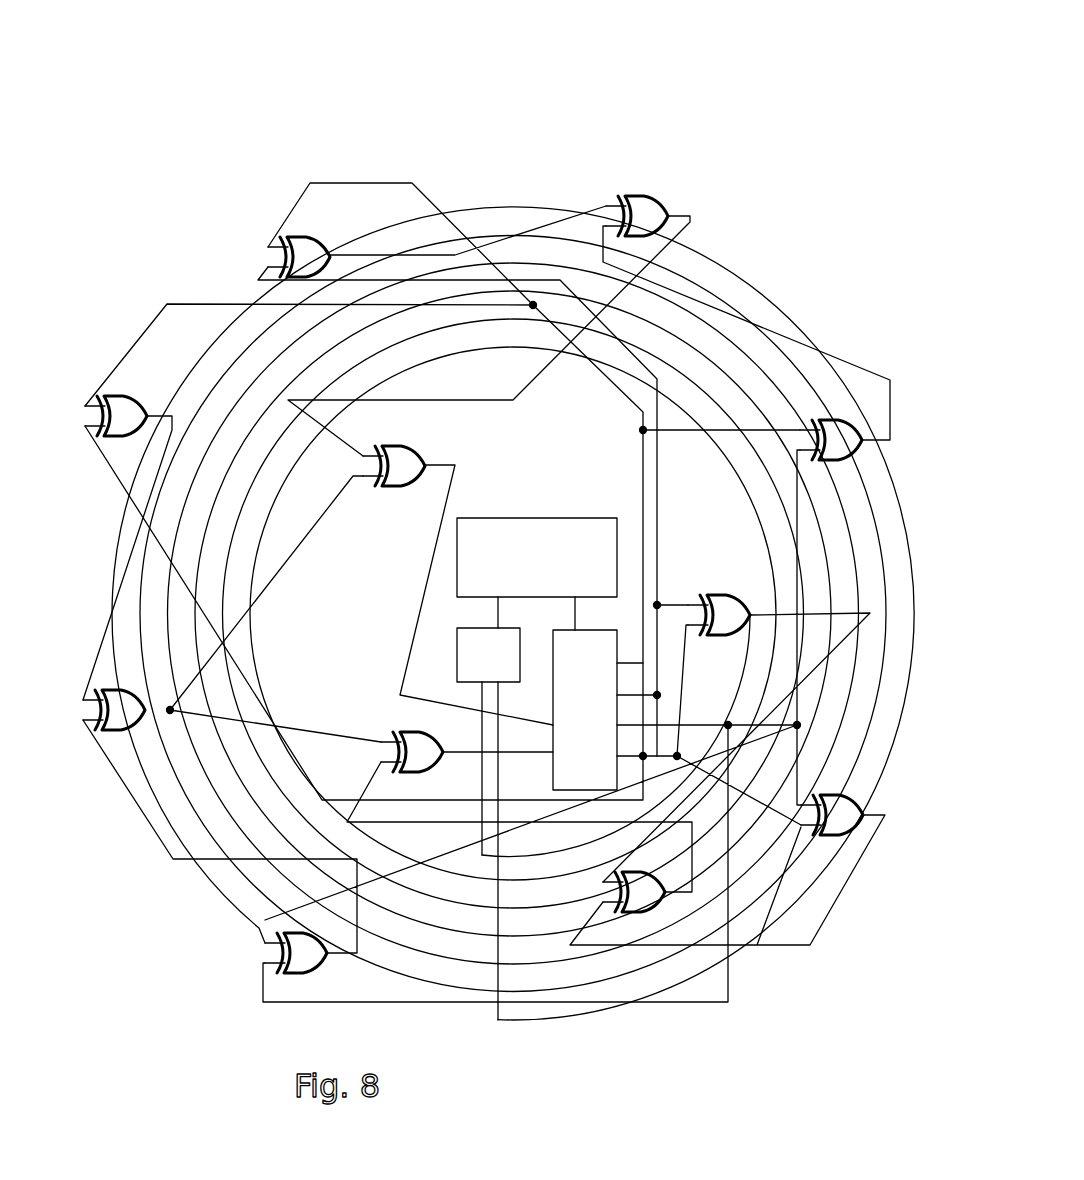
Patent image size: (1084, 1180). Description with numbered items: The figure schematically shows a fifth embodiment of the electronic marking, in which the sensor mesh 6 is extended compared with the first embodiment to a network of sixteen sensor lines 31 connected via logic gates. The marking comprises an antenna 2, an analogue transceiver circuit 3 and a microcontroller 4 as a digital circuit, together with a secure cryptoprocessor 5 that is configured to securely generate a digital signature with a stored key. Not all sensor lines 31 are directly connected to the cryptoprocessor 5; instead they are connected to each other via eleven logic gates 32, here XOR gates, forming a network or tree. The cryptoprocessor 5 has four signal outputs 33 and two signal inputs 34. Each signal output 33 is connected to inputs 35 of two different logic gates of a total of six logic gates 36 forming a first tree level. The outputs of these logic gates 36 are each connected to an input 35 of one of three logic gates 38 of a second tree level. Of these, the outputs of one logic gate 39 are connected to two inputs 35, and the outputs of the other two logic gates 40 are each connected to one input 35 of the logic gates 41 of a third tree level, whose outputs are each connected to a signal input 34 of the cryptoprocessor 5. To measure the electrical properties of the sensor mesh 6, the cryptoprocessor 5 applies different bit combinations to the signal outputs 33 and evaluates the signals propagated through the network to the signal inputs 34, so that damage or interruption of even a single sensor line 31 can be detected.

The antenna 2 is at (905, 528).
The analogue transceiver circuit 3 is at (488, 824).
The microcontroller 4 is at (537, 574).
The secure cryptoprocessor 5 is at (622, 710).
The sensor mesh 6 is at (783, 252).
The sensor line 31 is at (263, 980).
The logic gate 32 is at (623, 198).
The signal output 33 is at (613, 756).
The signal input 34 is at (550, 757).
The input 35 is at (513, 400).
The logic gate of first tree level 36 is at (474, 605).
The logic gate of second tree level 38 is at (375, 554).
The logic gate 39 is at (103, 726).
The logic gate 40 is at (630, 912).
The logic gate of third tree level 41 is at (403, 609).